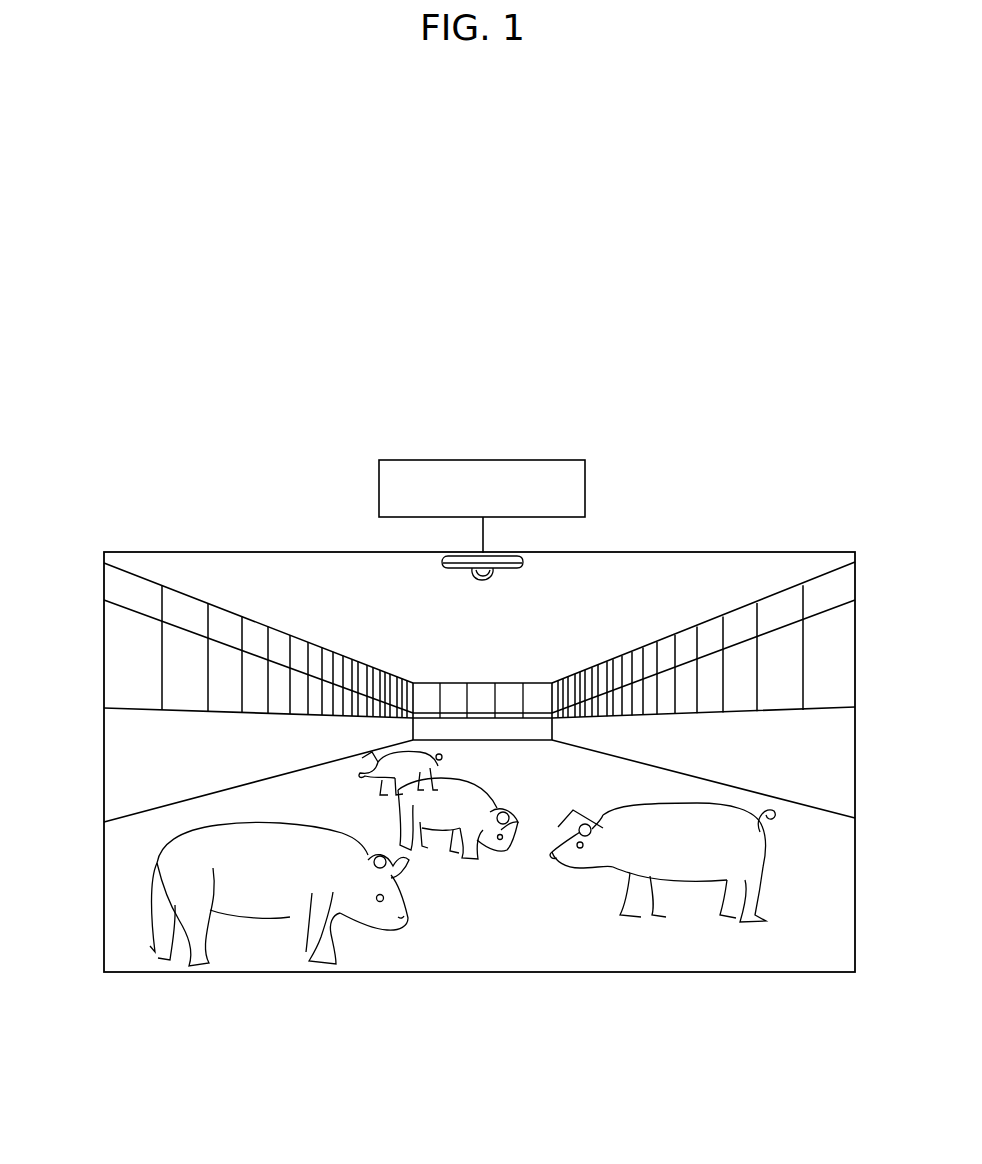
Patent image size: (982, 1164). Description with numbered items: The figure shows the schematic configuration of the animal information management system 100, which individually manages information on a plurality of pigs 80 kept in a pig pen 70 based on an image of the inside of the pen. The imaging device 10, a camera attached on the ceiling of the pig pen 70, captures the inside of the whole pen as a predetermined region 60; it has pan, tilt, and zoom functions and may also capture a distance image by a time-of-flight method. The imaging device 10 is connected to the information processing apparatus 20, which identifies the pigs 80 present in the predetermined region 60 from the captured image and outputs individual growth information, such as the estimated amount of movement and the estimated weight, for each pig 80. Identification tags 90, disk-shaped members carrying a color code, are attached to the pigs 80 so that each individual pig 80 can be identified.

The imaging device 10 is at (480, 587).
The information processing apparatus 20 is at (542, 460).
The animal information management system 100 is at (539, 517).
The predetermined region 60 is at (553, 936).
The pig pen 70 is at (122, 763).
The pig 80 is at (658, 887).
The identification tag 90 is at (573, 812).